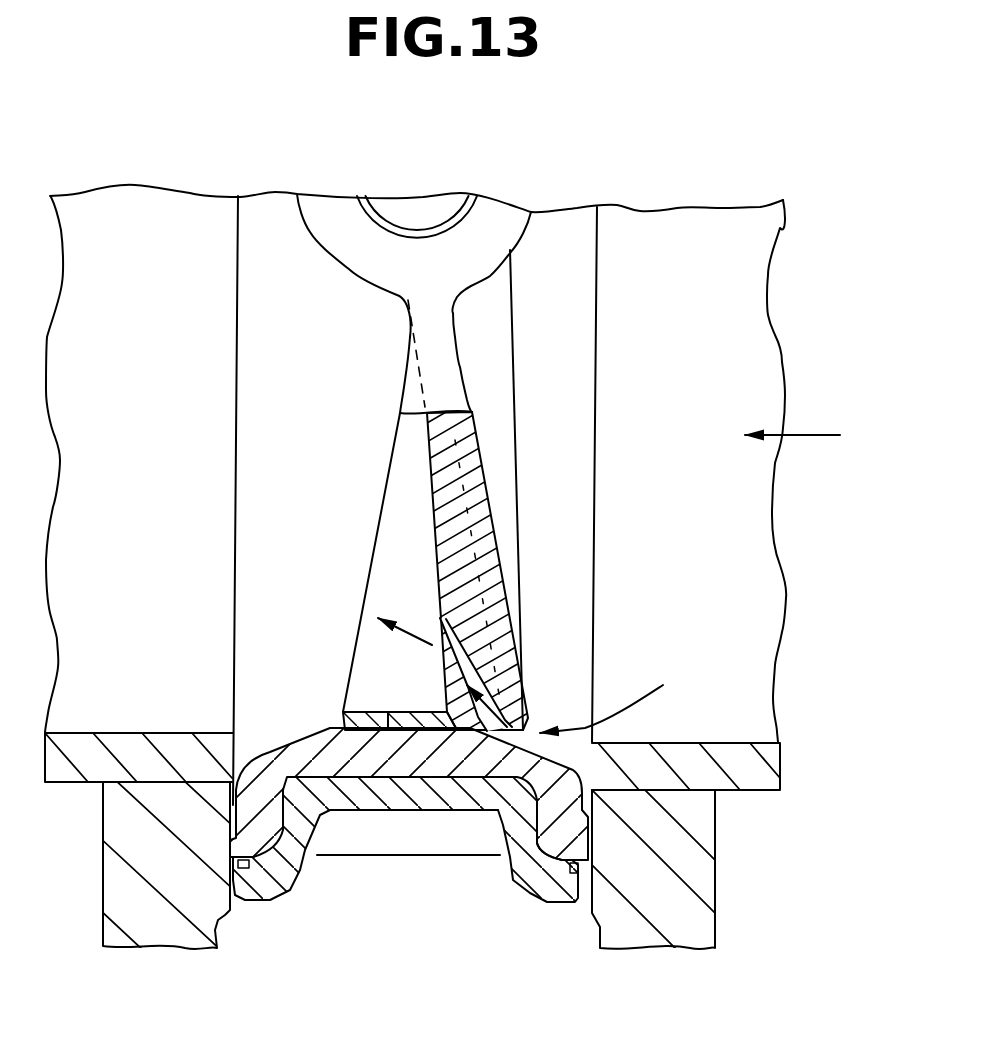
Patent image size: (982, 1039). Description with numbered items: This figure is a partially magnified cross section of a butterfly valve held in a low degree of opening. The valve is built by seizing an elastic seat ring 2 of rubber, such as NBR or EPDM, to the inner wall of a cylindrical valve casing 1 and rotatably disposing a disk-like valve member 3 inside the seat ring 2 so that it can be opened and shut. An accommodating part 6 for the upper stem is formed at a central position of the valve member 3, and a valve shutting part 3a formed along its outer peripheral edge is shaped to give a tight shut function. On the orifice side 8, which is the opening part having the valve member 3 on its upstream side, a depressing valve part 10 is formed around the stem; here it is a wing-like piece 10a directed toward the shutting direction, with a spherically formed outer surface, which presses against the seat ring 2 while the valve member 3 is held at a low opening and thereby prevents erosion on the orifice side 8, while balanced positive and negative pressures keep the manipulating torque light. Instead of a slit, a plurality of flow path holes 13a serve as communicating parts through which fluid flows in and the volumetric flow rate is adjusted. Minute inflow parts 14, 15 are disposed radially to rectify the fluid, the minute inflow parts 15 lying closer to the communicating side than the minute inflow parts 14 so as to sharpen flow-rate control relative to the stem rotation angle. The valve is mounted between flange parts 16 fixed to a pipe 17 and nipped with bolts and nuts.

The valve casing 1 is at (313, 878).
The elastic seat ring 2 is at (432, 770).
The valve member 3 is at (410, 360).
The valve shutting part 3a is at (506, 644).
The accommodating part 6 is at (452, 214).
The orifice side 8 is at (528, 720).
The depressing valve part 10 is at (475, 740).
The wing-like piece 10a is at (381, 812).
The flow path holes 13a is at (438, 628).
The minute inflow parts 14 is at (370, 717).
The minute inflow parts 15 is at (372, 718).
The flange part 16 is at (162, 930).
The pipe 17 is at (65, 773).